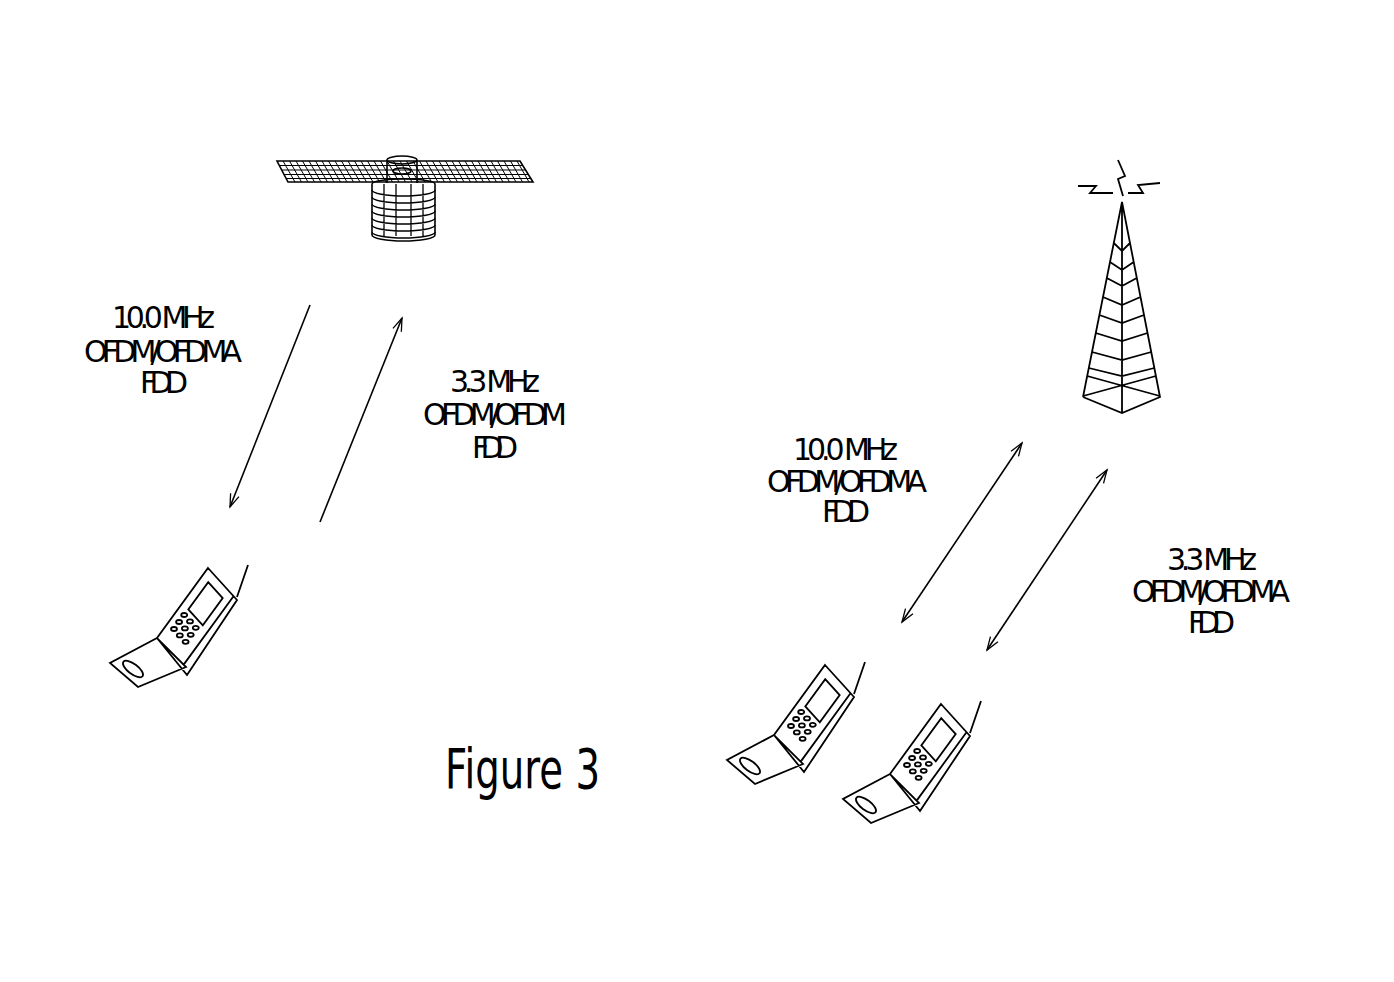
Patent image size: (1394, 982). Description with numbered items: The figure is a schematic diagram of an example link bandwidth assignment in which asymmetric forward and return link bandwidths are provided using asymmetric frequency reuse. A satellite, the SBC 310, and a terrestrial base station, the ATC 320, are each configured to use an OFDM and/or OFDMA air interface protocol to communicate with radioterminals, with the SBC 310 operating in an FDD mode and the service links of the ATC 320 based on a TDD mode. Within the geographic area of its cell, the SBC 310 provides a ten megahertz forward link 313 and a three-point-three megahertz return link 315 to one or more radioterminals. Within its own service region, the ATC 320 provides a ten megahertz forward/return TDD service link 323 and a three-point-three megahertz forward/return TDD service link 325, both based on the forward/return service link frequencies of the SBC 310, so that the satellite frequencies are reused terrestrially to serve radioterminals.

The SBC 310 is at (577, 150).
The ATC 320 is at (1217, 217).
The forward link 313 is at (257, 442).
The return link 315 is at (337, 480).
The forward/return TDD service link 323 is at (930, 580).
The forward/return TDD service link 325 is at (1019, 603).